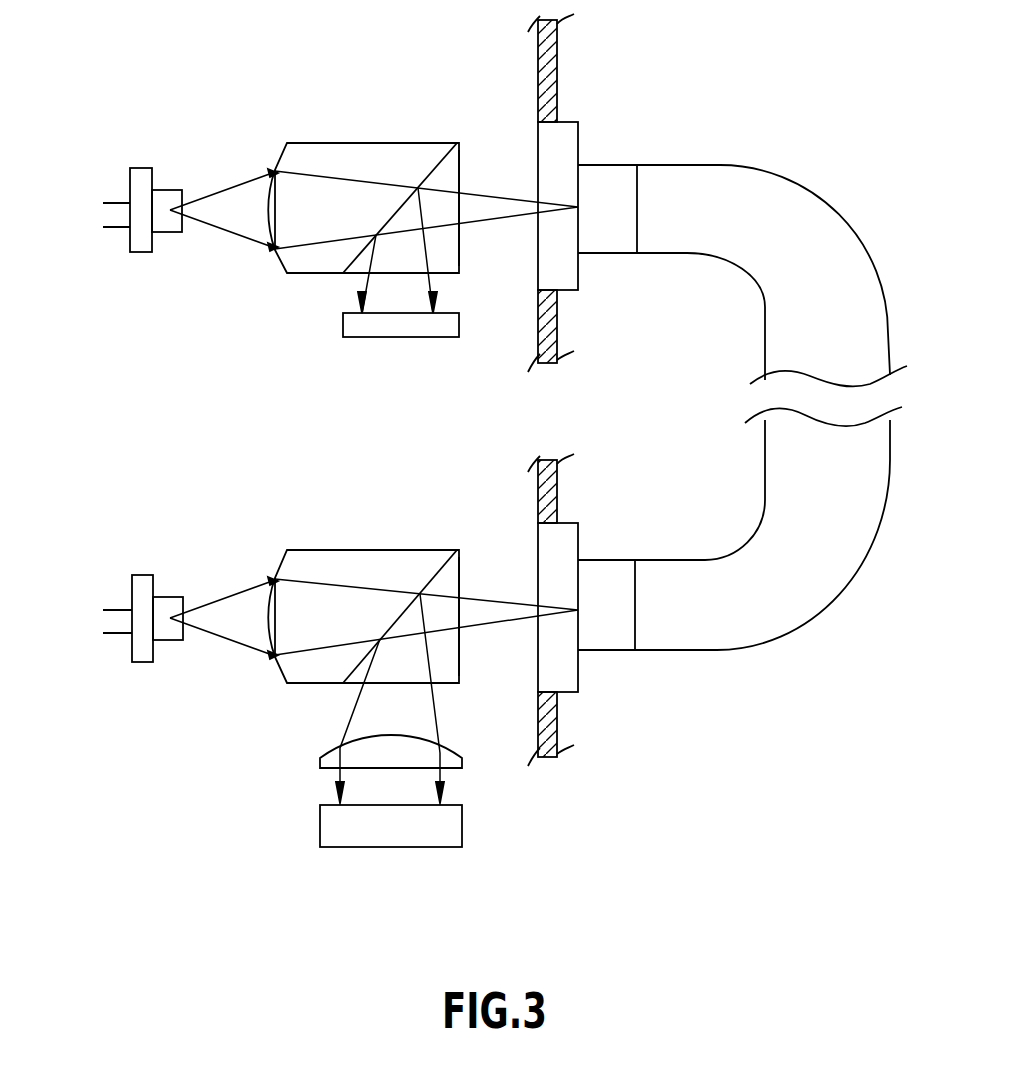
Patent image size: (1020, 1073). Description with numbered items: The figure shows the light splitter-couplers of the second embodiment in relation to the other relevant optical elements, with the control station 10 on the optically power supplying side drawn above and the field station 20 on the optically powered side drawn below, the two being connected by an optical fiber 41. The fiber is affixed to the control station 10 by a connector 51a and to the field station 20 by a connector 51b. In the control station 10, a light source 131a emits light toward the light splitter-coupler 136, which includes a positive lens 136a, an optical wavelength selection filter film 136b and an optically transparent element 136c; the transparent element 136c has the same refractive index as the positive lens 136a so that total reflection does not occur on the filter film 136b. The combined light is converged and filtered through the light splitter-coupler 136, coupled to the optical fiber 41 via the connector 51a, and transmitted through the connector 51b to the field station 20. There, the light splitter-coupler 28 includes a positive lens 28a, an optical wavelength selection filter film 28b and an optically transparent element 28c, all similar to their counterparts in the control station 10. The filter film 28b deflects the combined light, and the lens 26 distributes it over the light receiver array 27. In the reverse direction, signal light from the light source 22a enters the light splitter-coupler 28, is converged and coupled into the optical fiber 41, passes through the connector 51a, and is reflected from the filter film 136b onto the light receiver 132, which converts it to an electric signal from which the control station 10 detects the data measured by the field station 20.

The control station 10 is at (146, 86).
The light source 131a is at (140, 168).
The light splitter-coupler 136 is at (338, 142).
The positive lens 136a is at (275, 172).
The optical wavelength selection filter film 136b is at (438, 165).
The optically transparent element 136c is at (445, 257).
The light receiver 132 is at (343, 328).
The connector 51a is at (597, 163).
The optical fiber 41 is at (690, 163).
The field station 20 is at (146, 484).
The light source 22a is at (143, 573).
The light splitter-coupler 28 is at (338, 547).
The positive lens 28a is at (275, 585).
The optical wavelength selection filter film 28b is at (437, 567).
The optically transparent element 28c is at (445, 665).
The lens 26 is at (320, 757).
The light receiver array 27 is at (320, 825).
The connector 51b is at (607, 557).